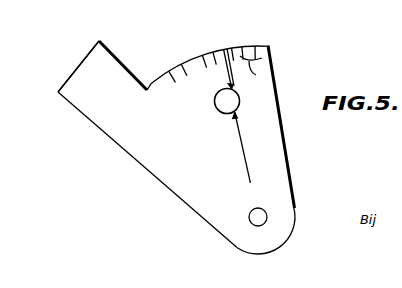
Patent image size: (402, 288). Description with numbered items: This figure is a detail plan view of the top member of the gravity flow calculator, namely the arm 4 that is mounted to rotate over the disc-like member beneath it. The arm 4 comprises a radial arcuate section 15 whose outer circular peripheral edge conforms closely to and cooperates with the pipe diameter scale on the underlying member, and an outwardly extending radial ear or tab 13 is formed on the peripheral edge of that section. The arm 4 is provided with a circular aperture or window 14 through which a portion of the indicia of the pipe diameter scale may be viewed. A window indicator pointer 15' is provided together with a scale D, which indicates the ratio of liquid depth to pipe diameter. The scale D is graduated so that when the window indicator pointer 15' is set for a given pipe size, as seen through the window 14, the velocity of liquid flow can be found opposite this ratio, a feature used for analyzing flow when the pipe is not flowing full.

The arm 4 is at (280, 190).
The radial ear or tab 13 is at (82, 72).
The scale D is at (156, 84).
The circular aperture or window 14 is at (236, 95).
The radial arcuate section 15 is at (183, 171).
The window indicator pointer 15' is at (245, 94).